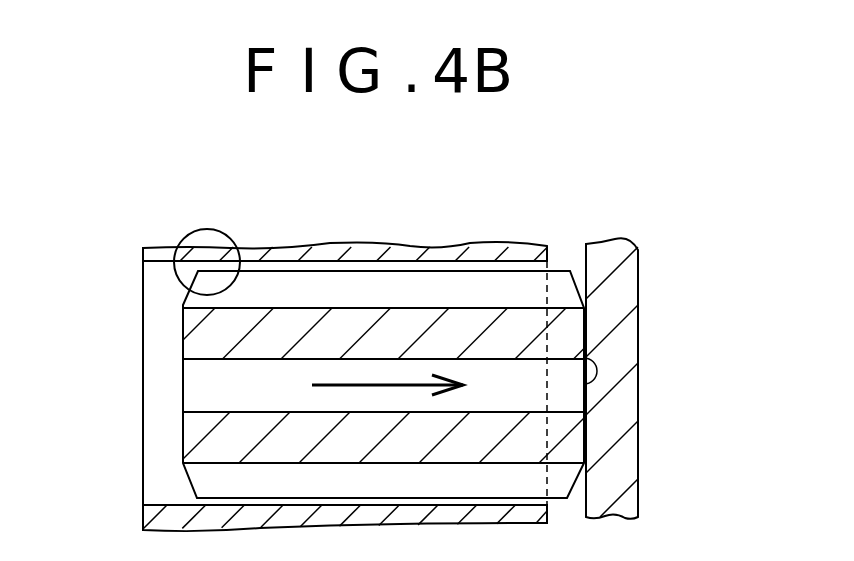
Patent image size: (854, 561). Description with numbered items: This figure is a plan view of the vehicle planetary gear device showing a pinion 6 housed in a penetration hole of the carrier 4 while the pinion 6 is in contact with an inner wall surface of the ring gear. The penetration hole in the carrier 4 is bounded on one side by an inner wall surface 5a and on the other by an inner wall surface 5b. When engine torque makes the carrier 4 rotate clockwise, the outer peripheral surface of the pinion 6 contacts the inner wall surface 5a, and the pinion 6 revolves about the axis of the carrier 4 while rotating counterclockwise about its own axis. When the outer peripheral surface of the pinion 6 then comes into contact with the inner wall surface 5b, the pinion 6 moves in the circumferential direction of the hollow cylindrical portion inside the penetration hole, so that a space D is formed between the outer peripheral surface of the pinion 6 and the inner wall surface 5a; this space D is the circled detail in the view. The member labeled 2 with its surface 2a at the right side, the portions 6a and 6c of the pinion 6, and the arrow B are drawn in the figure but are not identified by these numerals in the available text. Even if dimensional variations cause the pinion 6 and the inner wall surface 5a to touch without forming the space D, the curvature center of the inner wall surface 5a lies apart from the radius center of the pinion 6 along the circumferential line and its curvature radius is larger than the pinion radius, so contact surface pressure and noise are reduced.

The case 2 is at (638, 362).
The inner wall surface of case 2a is at (580, 270).
The carrier 4 is at (423, 242).
The inner wall surface 5a is at (160, 266).
The inner wall surface 5b is at (170, 508).
The pinion 6 is at (182, 433).
The upper electrode layer 6a is at (183, 351).
The end face of element body 6c is at (583, 383).
The space D is at (215, 229).
The direction B is at (372, 386).